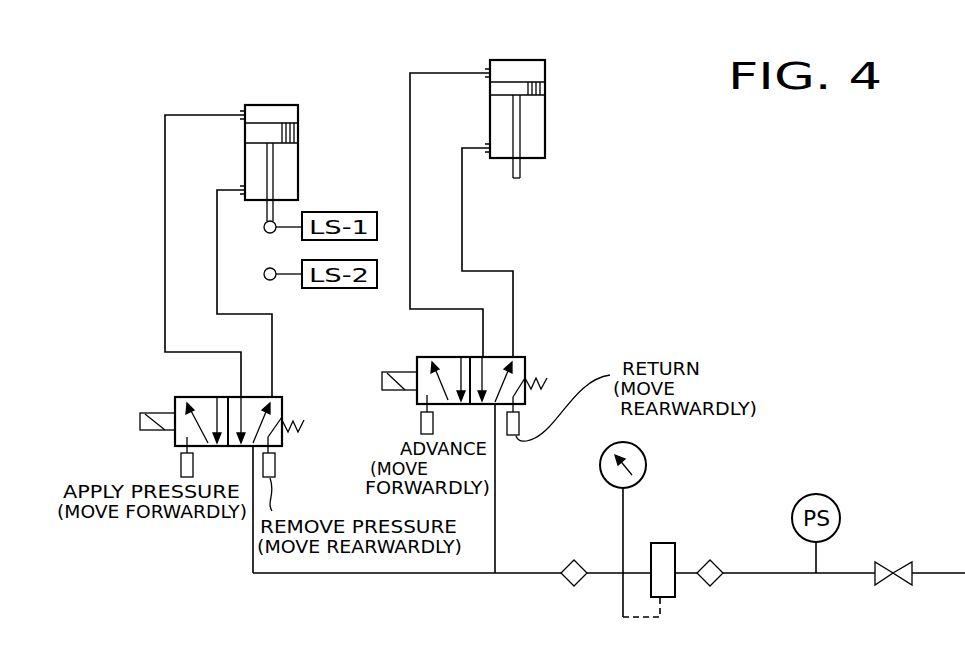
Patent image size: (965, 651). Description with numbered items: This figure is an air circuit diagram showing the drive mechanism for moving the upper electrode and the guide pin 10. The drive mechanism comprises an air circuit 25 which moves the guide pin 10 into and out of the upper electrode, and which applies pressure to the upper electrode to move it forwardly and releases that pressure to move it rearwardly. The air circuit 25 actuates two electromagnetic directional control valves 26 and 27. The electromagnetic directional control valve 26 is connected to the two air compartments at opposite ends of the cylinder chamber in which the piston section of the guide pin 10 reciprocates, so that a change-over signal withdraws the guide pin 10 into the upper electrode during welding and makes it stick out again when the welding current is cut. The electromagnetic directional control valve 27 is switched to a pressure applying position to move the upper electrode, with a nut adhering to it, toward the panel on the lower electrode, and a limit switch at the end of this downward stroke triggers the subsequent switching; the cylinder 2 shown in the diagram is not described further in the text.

The hydraulic cylinder 2 is at (270, 105).
The cylinder 25 is at (563, 137).
The piston rod 10 is at (521, 163).
The solenoid valve 26 is at (522, 357).
The solenoid valve 27 is at (283, 397).